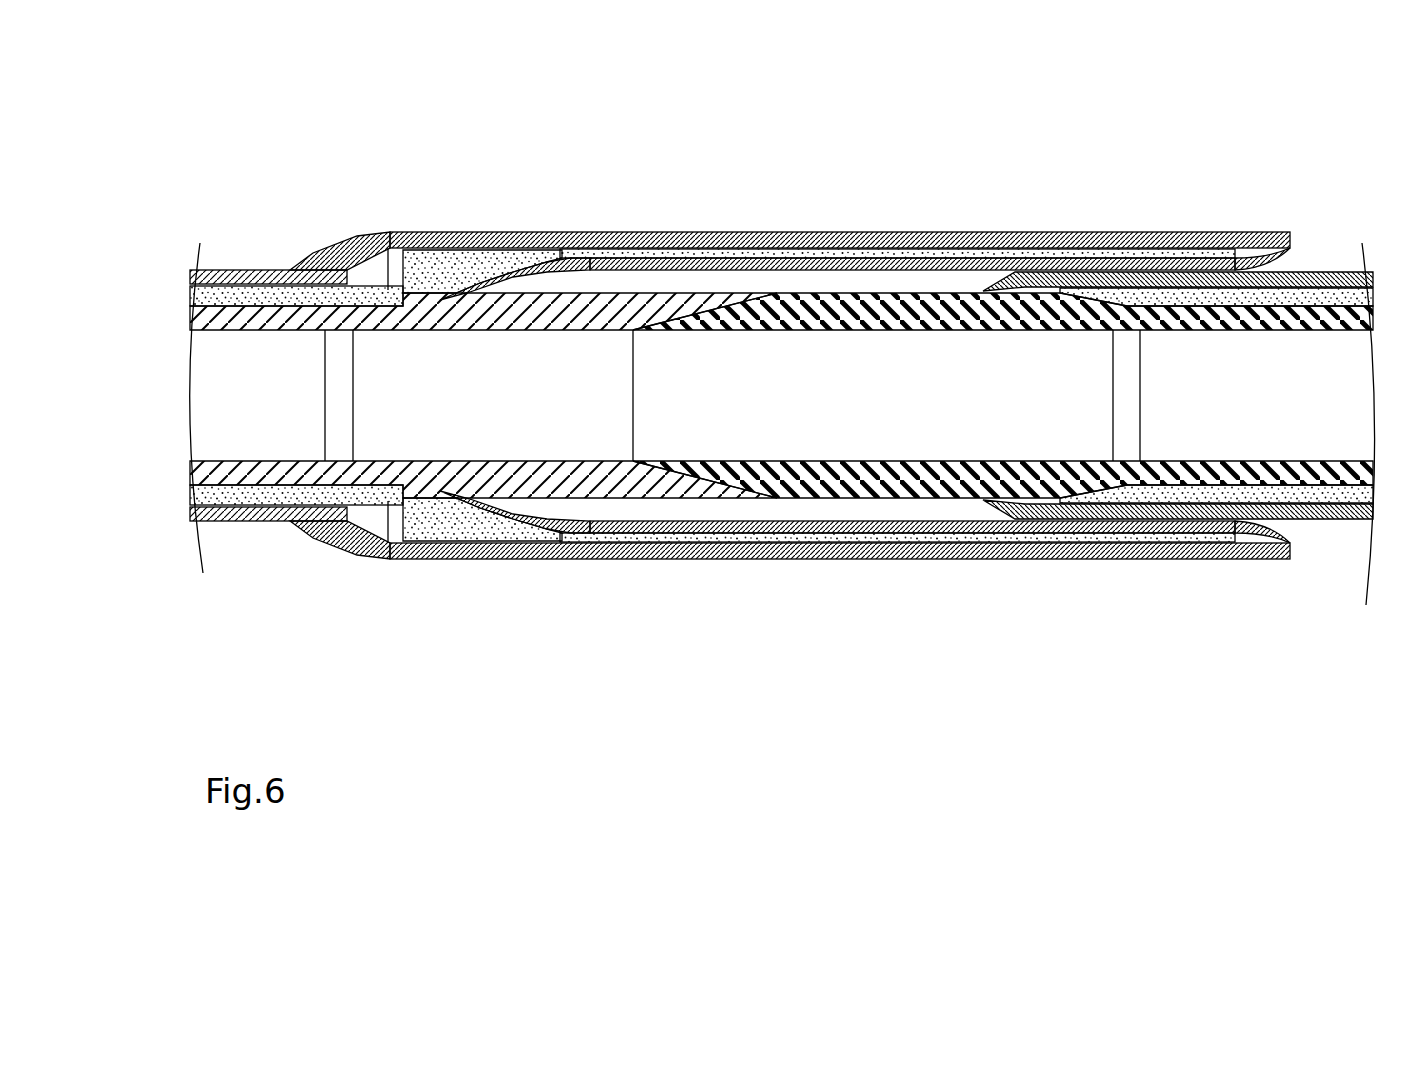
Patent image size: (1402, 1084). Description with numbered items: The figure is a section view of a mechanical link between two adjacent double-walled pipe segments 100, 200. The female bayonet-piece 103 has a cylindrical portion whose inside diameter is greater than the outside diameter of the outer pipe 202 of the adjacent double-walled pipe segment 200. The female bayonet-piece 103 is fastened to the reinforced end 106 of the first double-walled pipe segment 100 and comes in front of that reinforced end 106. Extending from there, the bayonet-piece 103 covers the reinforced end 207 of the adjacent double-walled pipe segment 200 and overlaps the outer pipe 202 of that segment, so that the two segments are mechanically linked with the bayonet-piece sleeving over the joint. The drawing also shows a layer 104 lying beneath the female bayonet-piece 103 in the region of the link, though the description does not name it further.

The double-walled pipe segment 100 is at (229, 236).
The female bayonet-piece 103 is at (623, 232).
The inner sleeve layer 104 is at (776, 232).
The reinforced end 106 is at (582, 515).
The adjacent double-walled pipe segment 200 is at (1330, 241).
The outer pipe 202 is at (1327, 522).
The reinforced end 207 is at (805, 504).